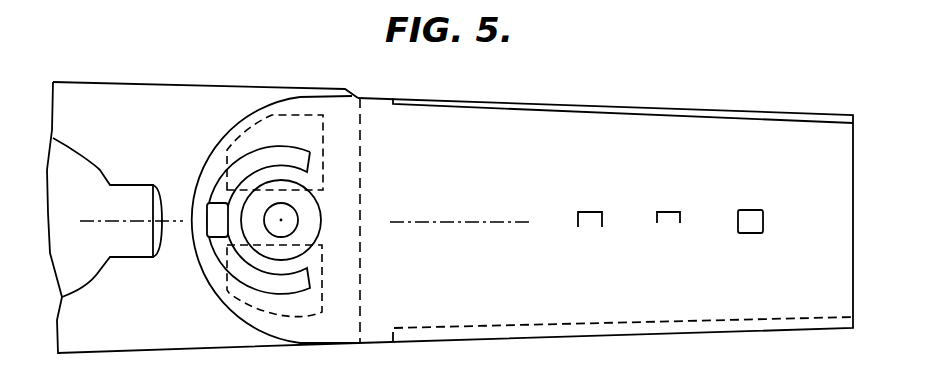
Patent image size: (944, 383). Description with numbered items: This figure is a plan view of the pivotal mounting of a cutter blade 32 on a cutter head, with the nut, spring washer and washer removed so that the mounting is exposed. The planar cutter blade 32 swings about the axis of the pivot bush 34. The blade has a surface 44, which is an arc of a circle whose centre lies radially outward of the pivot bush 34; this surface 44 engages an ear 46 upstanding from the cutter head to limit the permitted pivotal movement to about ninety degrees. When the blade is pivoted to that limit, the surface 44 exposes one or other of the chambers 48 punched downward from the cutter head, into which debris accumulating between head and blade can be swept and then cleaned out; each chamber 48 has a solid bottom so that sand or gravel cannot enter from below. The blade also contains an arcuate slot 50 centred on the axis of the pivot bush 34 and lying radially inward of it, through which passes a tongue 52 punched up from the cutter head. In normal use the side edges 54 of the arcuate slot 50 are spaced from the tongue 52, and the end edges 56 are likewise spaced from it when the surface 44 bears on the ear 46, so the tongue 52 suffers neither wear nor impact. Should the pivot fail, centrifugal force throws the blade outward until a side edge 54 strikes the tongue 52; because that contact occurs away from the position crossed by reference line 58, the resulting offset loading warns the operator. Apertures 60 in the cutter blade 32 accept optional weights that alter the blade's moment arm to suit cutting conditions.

The cutter blade 32 is at (527, 118).
The pivot bush 34 is at (316, 204).
The surface 44 is at (249, 325).
The ear 46 is at (158, 256).
The chamber 48 is at (262, 125).
The arcuate slot 50 is at (296, 152).
The tongue 52 is at (218, 213).
The side edge 54 is at (243, 283).
The end edge 56 is at (312, 287).
The reference line 58 is at (457, 224).
The aperture 60 is at (597, 210).